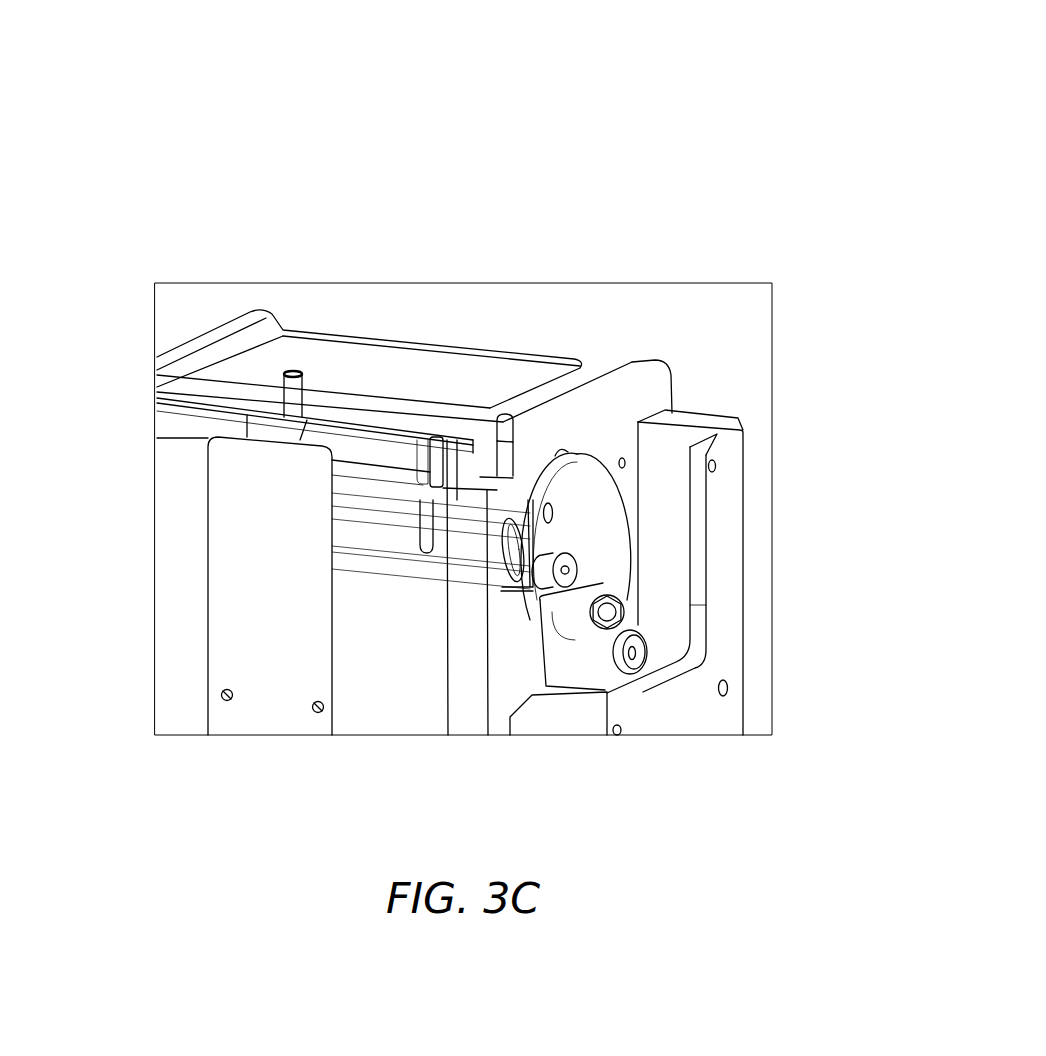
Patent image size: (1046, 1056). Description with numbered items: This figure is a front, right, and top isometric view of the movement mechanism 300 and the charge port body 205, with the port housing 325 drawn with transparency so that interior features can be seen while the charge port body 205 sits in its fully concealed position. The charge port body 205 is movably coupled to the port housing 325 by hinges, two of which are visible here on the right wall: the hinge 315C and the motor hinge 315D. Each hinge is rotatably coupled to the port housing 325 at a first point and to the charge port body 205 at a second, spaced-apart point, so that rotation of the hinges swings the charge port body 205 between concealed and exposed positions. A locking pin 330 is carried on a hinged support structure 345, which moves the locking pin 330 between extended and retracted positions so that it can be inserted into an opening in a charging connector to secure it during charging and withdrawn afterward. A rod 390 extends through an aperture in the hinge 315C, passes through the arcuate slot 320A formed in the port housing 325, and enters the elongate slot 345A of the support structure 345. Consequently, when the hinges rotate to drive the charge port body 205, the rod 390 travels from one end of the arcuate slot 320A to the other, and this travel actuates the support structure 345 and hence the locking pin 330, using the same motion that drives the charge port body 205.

The movement mechanism 300 is at (645, 92).
The charge port body 205 is at (355, 312).
The port housing 325 is at (637, 361).
The support structure 345 is at (418, 410).
The elongate slot 345A is at (423, 536).
The locking pin 330 is at (284, 394).
The rod 390 is at (467, 500).
The arcuate slot 320A is at (513, 520).
The hinge 315C is at (590, 524).
The motor hinge 315D is at (590, 660).